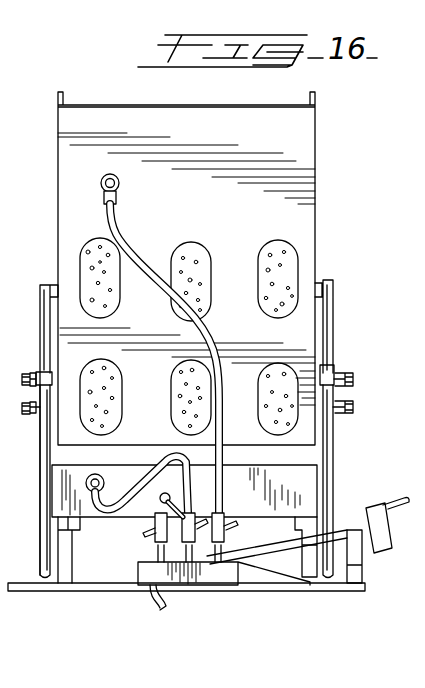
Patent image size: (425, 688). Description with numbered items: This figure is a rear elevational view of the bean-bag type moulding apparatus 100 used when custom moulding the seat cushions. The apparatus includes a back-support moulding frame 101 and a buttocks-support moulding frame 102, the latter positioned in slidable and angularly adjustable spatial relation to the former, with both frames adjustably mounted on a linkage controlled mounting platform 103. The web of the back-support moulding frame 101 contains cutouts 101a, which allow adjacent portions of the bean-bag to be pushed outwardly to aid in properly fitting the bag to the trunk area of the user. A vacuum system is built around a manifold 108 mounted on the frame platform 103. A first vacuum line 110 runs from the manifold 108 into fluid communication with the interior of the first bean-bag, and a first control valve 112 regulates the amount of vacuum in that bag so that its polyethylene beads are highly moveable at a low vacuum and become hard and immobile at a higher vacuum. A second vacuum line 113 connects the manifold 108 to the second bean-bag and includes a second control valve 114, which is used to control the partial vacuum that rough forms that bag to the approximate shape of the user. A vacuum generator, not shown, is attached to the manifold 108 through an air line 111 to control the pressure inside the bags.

The bean-bag type moulding apparatus 100 is at (364, 378).
The back-support moulding frame 101 is at (297, 162).
The cutouts 101a is at (82, 244).
The buttocks-support moulding frame 102 is at (3, 120).
The linkage controlled mounting platform 103 is at (97, 589).
The manifold 108 is at (232, 584).
The first vacuum line 110 is at (136, 255).
The air line 111 is at (163, 600).
The first control valve 112 is at (224, 518).
The second vacuum line 113 is at (133, 480).
The second control valve 114 is at (193, 520).